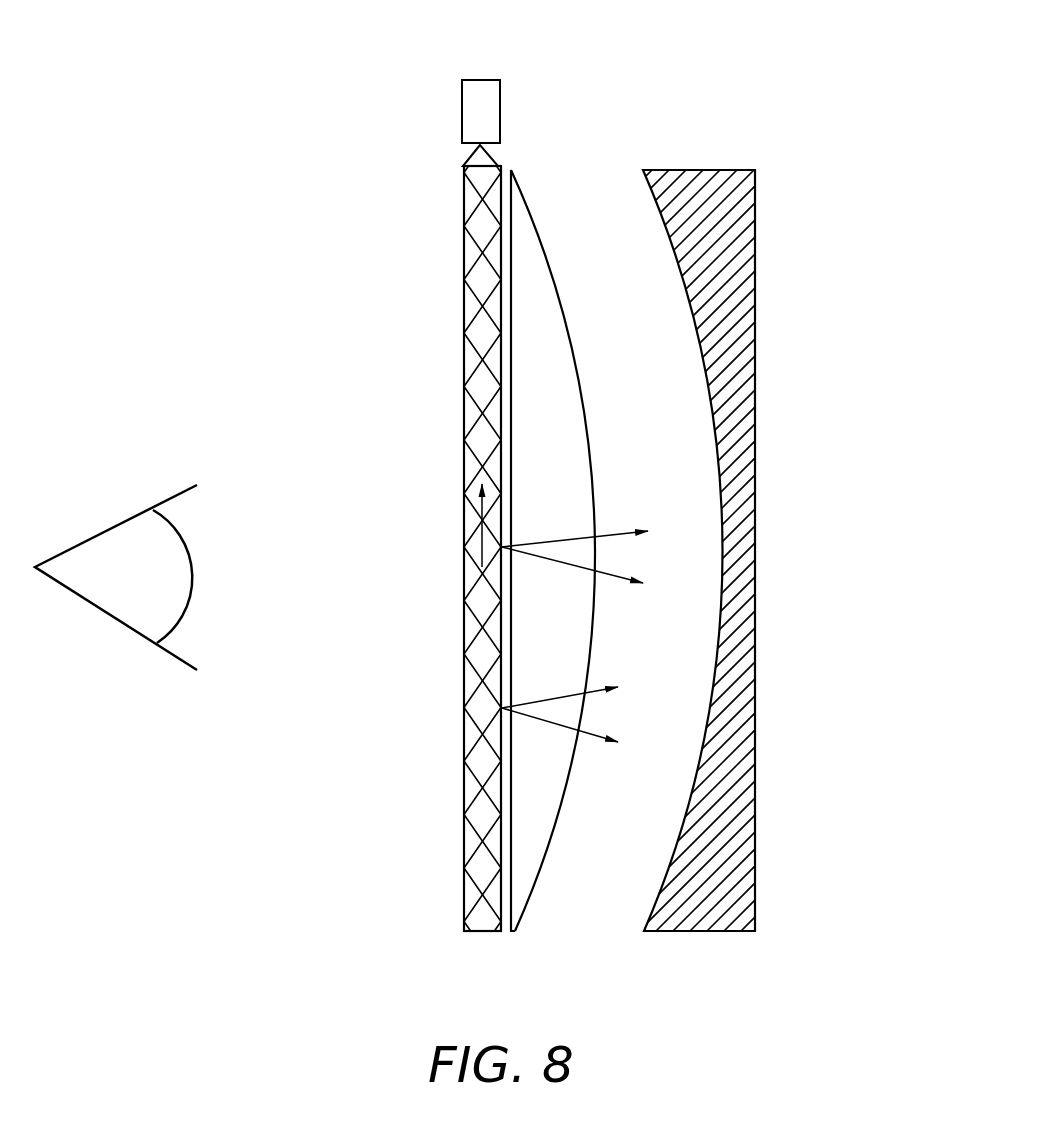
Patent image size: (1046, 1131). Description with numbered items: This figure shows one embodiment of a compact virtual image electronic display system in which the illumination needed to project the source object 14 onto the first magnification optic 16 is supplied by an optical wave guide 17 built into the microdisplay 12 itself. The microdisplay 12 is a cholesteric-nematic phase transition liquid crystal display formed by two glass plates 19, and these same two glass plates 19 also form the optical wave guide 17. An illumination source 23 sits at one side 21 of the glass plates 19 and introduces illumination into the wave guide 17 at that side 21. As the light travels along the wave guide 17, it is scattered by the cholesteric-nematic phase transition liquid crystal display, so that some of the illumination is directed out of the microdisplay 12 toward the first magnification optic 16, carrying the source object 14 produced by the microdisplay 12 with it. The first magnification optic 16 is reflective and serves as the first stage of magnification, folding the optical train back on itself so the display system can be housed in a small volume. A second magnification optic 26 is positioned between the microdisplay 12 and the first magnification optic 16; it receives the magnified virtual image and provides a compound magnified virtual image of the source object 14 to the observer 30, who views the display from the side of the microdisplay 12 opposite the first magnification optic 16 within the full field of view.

The microdisplay 12 is at (436, 548).
The source object 14 is at (510, 613).
The first magnification optic 16 is at (523, 550).
The optical wave guide 17 is at (433, 548).
The glass plates 19 is at (435, 156).
The side of the glass plates 21 is at (566, 515).
The illumination source 23 is at (453, 76).
The second magnification optic 26 is at (579, 550).
The observer 30 is at (116, 573).